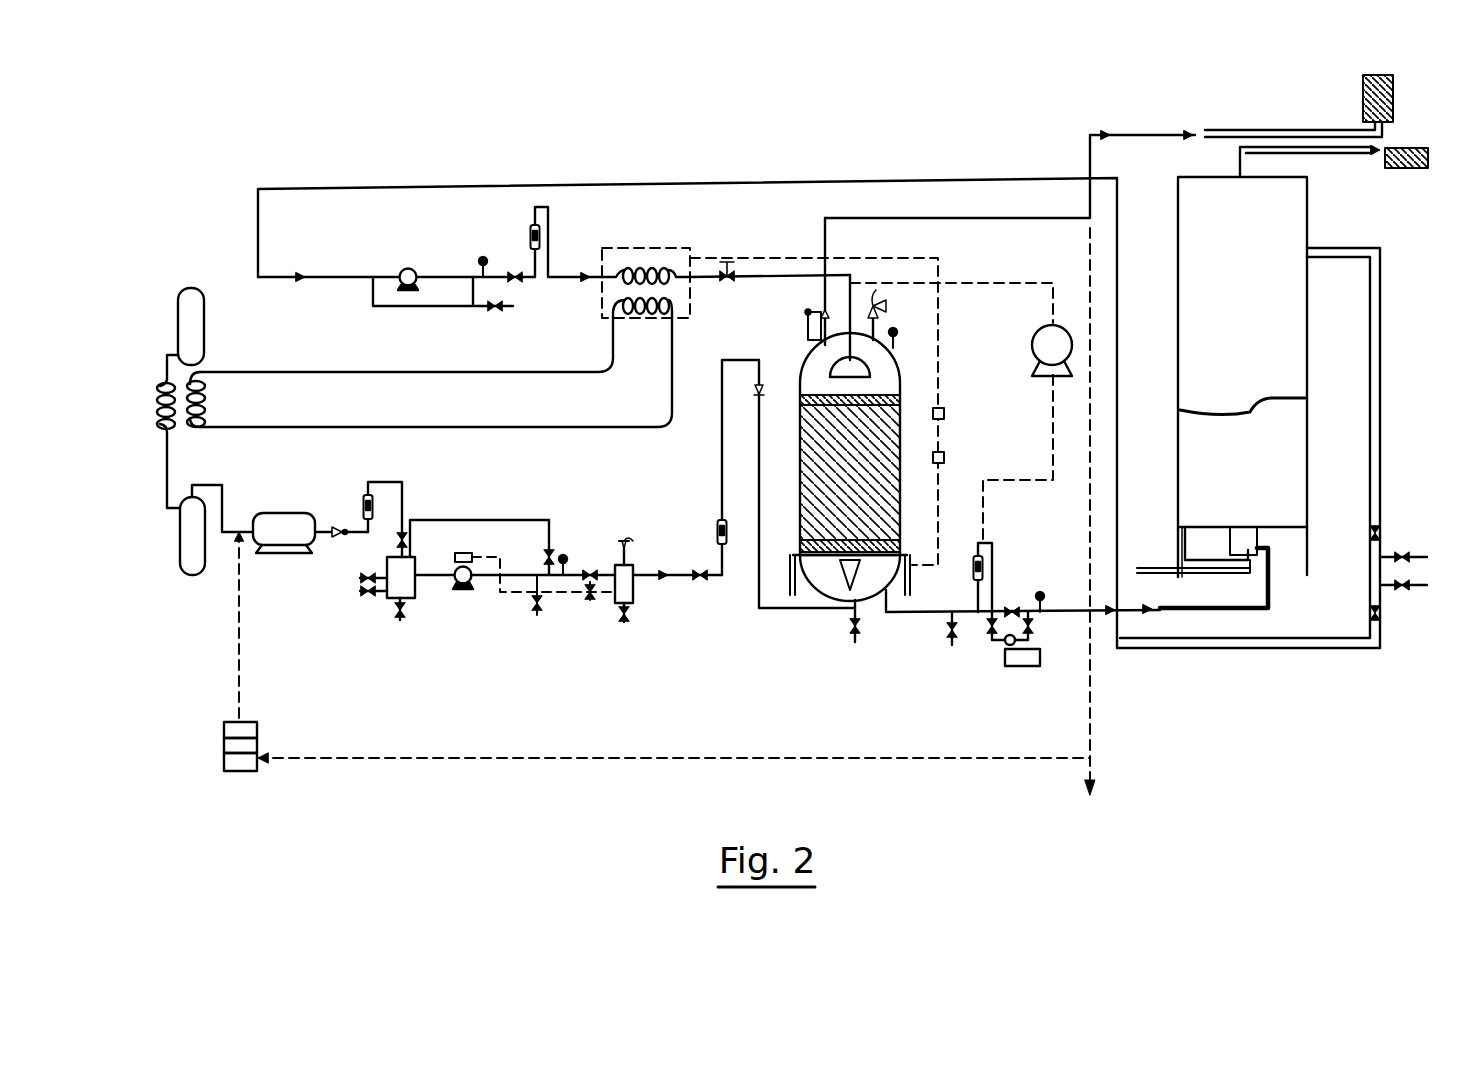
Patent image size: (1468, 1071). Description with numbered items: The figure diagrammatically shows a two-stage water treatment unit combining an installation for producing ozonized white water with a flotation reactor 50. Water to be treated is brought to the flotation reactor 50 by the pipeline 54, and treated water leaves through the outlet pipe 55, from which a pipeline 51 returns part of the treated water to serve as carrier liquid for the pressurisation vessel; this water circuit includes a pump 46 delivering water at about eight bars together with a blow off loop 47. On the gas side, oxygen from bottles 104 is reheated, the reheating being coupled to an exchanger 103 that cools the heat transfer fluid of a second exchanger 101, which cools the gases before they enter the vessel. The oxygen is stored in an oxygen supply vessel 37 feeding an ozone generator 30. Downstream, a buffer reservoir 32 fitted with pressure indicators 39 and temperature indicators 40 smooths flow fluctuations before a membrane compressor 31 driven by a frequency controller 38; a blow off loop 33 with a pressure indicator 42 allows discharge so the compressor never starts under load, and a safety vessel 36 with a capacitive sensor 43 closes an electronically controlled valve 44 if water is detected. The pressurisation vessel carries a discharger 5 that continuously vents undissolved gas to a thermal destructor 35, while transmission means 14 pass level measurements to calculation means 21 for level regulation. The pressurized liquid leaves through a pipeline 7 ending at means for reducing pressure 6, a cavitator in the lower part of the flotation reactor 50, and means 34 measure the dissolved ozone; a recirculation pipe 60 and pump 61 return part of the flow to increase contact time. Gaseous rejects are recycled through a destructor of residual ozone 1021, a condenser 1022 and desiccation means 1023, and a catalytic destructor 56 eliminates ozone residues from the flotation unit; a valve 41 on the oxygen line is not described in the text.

The discharger 5 is at (808, 325).
The means for reducing pressure 6 is at (1258, 540).
The pipeline 7 is at (1060, 616).
The transmission means 14 is at (946, 457).
The calculation means 21 is at (946, 413).
The ozone generator 30 is at (276, 513).
The membrane compressor 31 is at (466, 587).
The reservoir 32 is at (413, 598).
The blow off loop 33 is at (510, 519).
The means for measuring dissolved ozone 34 is at (992, 652).
The thermal destructor 35 is at (1395, 98).
The safety vessel 36 is at (633, 600).
The oxygen supply vessel 37 is at (192, 575).
The frequency controller 38 is at (462, 552).
The pressure indicators 39 is at (360, 579).
The temperature indicators 40 is at (362, 593).
The valve 41 is at (395, 540).
The pressure indicator 42 is at (397, 613).
The capacitive sensor 43 is at (614, 593).
The electronically controlled valve 44 is at (590, 568).
The pump 46 is at (405, 268).
The blow off loop 47 is at (372, 297).
The flotation reactor 50 is at (1178, 238).
The pipeline 51 is at (465, 188).
The pipeline 54 is at (1155, 565).
The outlet pipe 55 is at (1382, 385).
The catalytic destructor 56 is at (1416, 168).
The recirculation pipe 60 is at (1032, 485).
The pump 61 is at (1034, 345).
The exchanger 101 is at (655, 238).
The exchanger 103 is at (212, 407).
The bottles 104 is at (192, 288).
The destructor of residual ozone 1021 is at (230, 760).
The condenser 1022 is at (252, 743).
The desiccation means 1023 is at (230, 730).